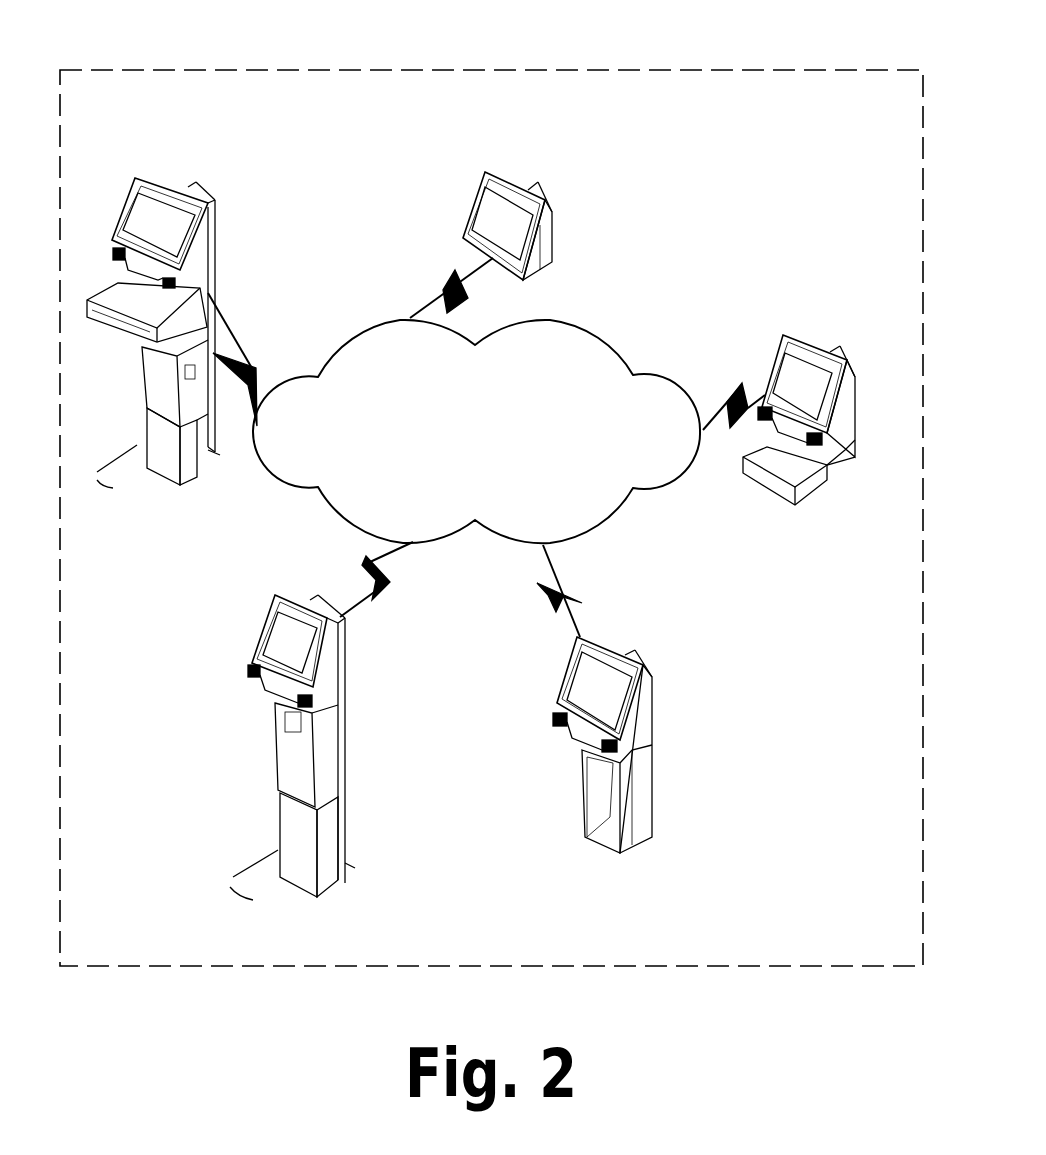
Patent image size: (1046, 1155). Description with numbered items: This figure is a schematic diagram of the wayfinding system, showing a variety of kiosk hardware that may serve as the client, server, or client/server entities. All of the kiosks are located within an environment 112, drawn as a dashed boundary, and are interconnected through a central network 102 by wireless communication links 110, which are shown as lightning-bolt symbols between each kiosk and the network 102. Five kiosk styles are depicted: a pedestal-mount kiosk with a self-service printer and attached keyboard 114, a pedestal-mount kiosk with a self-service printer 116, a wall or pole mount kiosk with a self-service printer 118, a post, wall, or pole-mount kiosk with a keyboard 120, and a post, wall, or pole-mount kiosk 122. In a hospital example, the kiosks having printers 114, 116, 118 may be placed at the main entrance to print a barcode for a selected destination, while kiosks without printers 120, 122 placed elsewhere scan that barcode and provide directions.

The network 102 is at (476, 431).
The communication links 110 is at (455, 270).
The environment 112 is at (441, 68).
The pedestal-mount with self-service printer and attached keyboard kiosk 114 is at (206, 308).
The pedestal-mount with self-service printer kiosk 116 is at (243, 720).
The wall or pole mount with self-service printer kiosk 118 is at (659, 715).
The post, wall, or pole-mount with keyboard kiosk 120 is at (831, 441).
The post, wall or pole-mount kiosk 122 is at (553, 204).